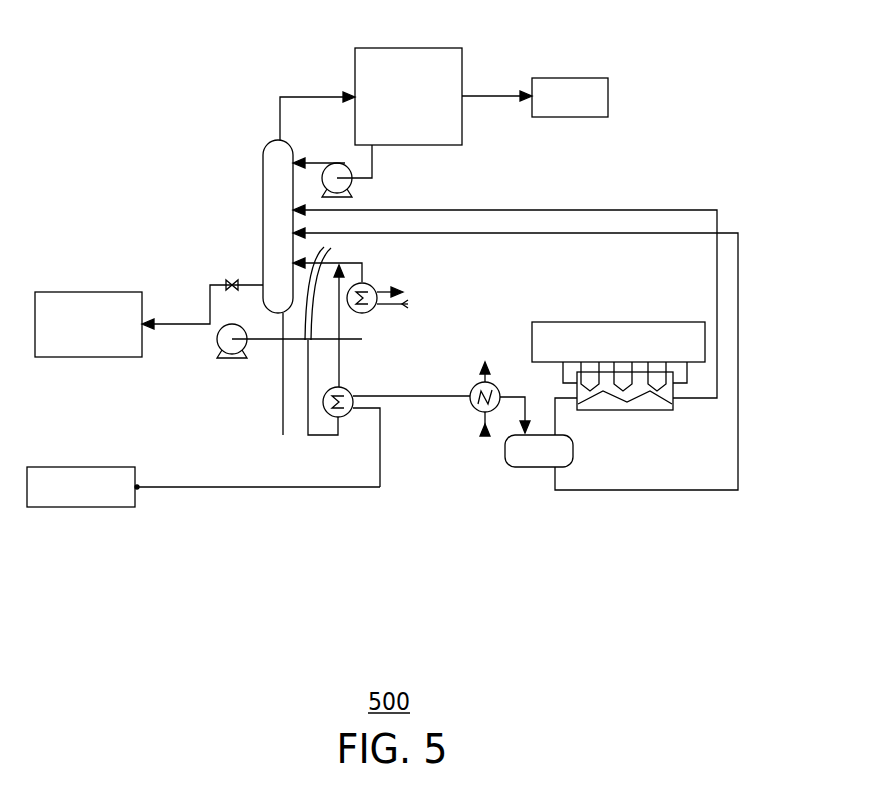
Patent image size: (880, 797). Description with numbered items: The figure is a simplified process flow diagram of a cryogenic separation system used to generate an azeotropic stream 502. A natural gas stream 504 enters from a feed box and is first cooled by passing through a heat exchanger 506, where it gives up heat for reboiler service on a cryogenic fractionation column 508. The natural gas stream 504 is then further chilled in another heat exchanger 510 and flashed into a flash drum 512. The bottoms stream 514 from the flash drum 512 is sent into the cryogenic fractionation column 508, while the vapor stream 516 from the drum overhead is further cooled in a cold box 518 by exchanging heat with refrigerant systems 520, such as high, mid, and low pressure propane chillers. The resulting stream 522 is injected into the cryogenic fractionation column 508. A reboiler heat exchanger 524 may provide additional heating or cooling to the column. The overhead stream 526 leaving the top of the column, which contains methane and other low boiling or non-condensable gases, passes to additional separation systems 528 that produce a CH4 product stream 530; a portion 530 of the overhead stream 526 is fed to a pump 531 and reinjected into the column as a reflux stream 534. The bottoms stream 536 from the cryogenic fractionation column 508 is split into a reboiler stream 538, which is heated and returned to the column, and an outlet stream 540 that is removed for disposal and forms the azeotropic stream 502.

The azeotropic stream 502 is at (103, 292).
The natural gas stream 504 is at (75, 467).
The heat exchanger 506 is at (347, 387).
The cryogenic fractionation column 508 is at (263, 178).
The heat exchanger 510 is at (470, 406).
The flash drum 512 is at (537, 468).
The bottoms stream 514 is at (622, 492).
The vapor stream 516 is at (555, 413).
The cold box 518 is at (657, 410).
The refrigerant systems 520 is at (592, 322).
The resulting stream 522 is at (717, 275).
The reboiler heat exchanger 524 is at (367, 282).
The overhead stream 526 is at (280, 122).
The additional separation systems 528 is at (408, 48).
The CH4 product stream 530 is at (562, 78).
The pump 531 is at (348, 190).
The reflux stream 534 is at (325, 163).
The bottoms stream 536 is at (283, 345).
The reboiler stream 538 is at (337, 313).
The outlet stream 540 is at (185, 324).